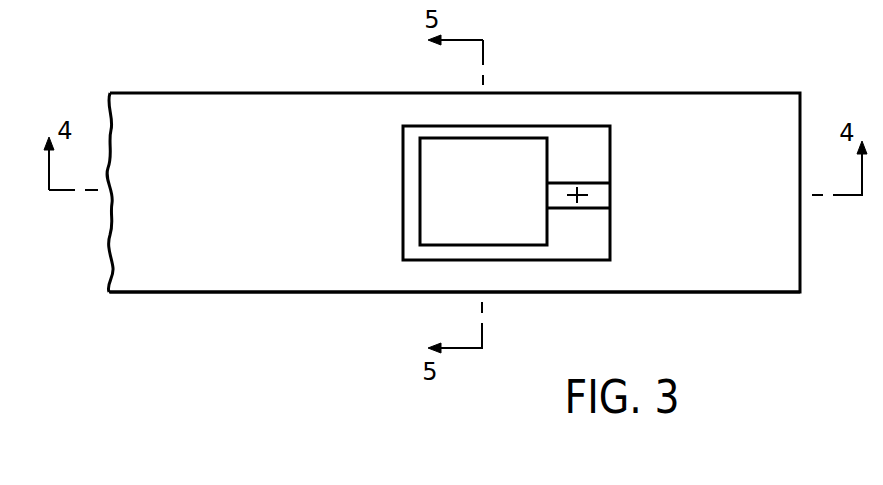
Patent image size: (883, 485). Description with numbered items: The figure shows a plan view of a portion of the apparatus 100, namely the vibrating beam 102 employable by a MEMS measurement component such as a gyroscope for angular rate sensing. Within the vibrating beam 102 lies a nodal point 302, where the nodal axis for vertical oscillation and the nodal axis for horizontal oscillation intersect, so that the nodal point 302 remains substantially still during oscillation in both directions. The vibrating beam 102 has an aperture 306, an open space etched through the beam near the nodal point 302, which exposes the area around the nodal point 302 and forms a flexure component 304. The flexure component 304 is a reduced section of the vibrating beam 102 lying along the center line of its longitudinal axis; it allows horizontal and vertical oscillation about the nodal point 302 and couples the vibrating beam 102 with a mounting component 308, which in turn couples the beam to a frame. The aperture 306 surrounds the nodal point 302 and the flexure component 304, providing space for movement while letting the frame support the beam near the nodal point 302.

The apparatus 100 is at (127, 73).
The vibrating beam 102 is at (147, 275).
The nodal point 302 is at (579, 190).
The flexure component 304 is at (559, 186).
The aperture 306 is at (587, 233).
The mounting component 308 is at (428, 228).